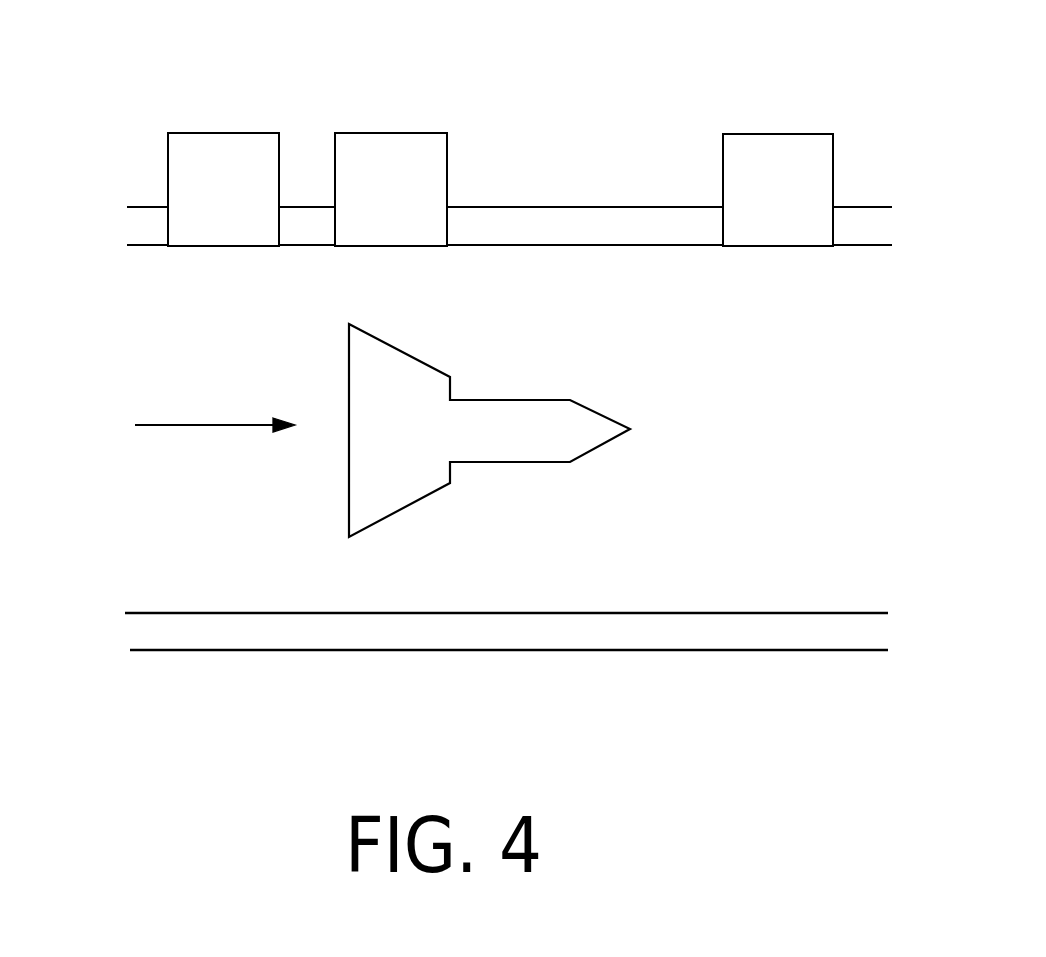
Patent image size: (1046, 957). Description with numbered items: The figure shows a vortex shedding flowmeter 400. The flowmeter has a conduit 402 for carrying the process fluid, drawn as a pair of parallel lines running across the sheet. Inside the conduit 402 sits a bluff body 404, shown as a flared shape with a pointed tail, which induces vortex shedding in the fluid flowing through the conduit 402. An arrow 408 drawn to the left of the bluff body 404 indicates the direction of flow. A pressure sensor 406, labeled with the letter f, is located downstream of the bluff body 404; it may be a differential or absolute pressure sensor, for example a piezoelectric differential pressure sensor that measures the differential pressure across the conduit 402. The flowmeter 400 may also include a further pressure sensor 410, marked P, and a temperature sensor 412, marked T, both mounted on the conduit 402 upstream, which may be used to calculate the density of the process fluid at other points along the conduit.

The vortex shedding flowmeter 400 is at (638, 38).
The conduit 402 is at (140, 207).
The bluff body 404 is at (528, 400).
The pressure sensor 406 is at (748, 134).
The arrow 408 is at (140, 425).
The pressure sensor 410 is at (196, 134).
The temperature sensor 412 is at (350, 133).